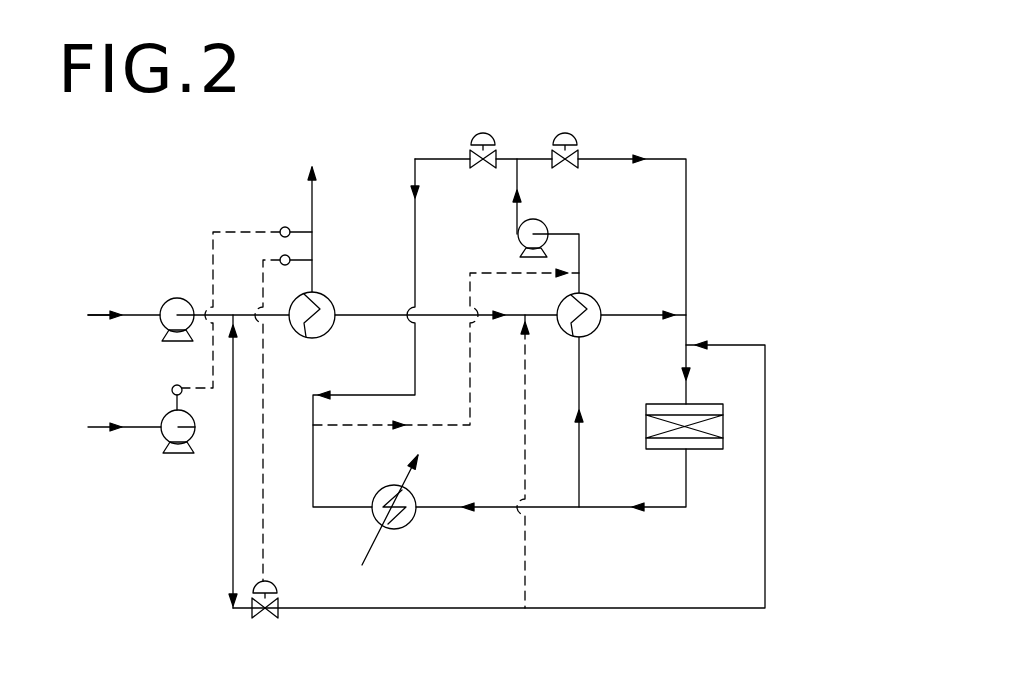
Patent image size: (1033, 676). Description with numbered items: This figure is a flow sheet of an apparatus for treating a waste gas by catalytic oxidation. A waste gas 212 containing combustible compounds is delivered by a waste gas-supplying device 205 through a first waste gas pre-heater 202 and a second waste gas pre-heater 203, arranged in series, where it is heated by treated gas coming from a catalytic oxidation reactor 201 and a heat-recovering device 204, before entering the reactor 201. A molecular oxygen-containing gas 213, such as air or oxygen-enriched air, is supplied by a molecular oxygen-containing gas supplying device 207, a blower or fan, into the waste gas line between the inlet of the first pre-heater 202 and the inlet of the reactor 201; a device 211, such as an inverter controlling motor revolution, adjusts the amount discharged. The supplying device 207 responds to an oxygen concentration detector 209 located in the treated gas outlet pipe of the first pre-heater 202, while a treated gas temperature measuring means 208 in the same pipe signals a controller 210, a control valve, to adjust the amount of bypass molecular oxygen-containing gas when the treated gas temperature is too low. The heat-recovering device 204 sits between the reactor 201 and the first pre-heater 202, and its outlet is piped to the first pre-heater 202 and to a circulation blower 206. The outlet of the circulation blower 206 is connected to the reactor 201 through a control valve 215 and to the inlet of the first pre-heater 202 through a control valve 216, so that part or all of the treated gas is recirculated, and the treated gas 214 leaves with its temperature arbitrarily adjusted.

The catalytic oxidation reactor 201 is at (695, 404).
The first waste gas pre-heater 202 is at (327, 298).
The second waste gas pre-heater 203 is at (596, 298).
The heat-recovering device 204 is at (414, 495).
The waste gas-supplying device 205 is at (177, 298).
The circulation blower 206 is at (545, 223).
The molecular oxygen-containing gas supplying device 207 is at (170, 453).
The treated gas temperature measuring means 208 is at (281, 257).
The oxygen concentration detector 209 is at (282, 227).
The controller 210 is at (272, 583).
The device to adjust the amount of discharged molecular oxygen-containing gas 211 is at (177, 385).
The waste gas 212 is at (75, 315).
The molecular oxygen-containing gas 213 is at (101, 427).
The treated gas 214 is at (315, 211).
The control valve 215 is at (566, 131).
The control valve 216 is at (483, 131).